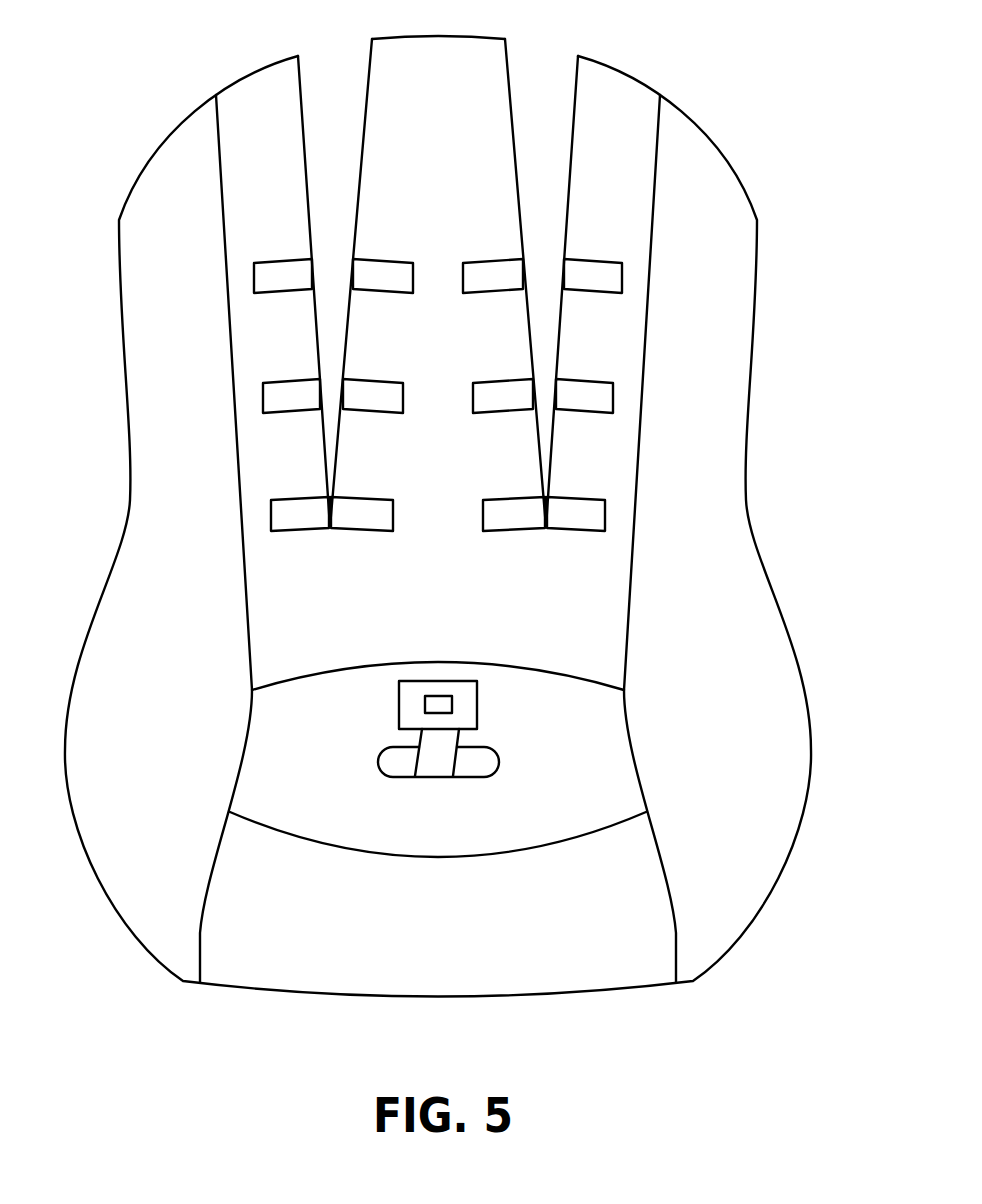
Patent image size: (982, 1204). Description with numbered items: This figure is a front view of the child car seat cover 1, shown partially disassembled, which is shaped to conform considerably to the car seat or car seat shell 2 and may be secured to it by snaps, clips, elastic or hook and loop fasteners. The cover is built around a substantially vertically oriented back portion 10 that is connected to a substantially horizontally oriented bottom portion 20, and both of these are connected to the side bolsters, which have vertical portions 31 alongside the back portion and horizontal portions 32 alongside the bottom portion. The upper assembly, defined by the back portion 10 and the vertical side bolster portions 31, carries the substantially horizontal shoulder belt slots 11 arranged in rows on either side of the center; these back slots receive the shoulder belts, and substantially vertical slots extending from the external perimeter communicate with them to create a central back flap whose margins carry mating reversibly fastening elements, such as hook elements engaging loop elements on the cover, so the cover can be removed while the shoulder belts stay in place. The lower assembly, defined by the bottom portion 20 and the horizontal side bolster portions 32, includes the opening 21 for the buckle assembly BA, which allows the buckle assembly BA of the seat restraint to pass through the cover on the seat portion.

The child car seat cover 1 is at (613, 103).
The car seat shell 2 is at (107, 372).
The vertical side bolster portion 31 is at (197, 193).
The shoulder belt slots 11 is at (285, 297).
The horizontal side bolster portion 32 is at (215, 728).
The back portion 10 is at (450, 638).
The bottom portion 20 is at (450, 834).
The opening for the buckle assembly 21 is at (478, 778).
The buckle assembly BA is at (467, 681).